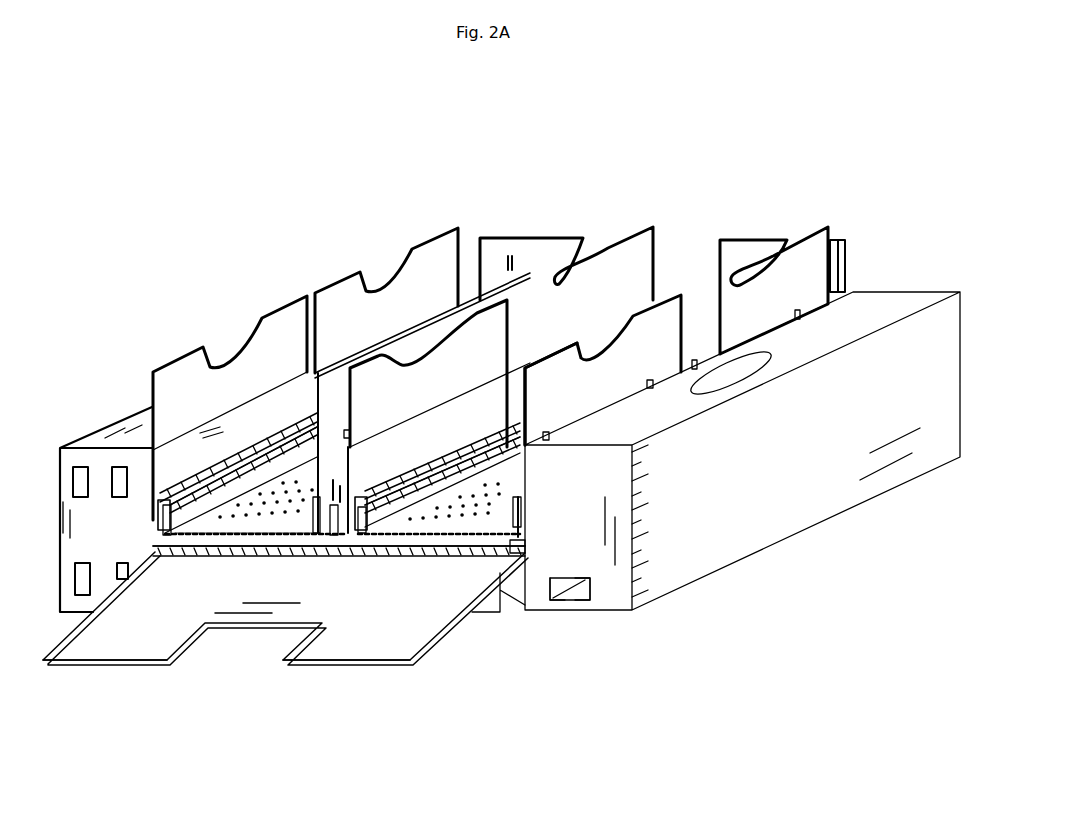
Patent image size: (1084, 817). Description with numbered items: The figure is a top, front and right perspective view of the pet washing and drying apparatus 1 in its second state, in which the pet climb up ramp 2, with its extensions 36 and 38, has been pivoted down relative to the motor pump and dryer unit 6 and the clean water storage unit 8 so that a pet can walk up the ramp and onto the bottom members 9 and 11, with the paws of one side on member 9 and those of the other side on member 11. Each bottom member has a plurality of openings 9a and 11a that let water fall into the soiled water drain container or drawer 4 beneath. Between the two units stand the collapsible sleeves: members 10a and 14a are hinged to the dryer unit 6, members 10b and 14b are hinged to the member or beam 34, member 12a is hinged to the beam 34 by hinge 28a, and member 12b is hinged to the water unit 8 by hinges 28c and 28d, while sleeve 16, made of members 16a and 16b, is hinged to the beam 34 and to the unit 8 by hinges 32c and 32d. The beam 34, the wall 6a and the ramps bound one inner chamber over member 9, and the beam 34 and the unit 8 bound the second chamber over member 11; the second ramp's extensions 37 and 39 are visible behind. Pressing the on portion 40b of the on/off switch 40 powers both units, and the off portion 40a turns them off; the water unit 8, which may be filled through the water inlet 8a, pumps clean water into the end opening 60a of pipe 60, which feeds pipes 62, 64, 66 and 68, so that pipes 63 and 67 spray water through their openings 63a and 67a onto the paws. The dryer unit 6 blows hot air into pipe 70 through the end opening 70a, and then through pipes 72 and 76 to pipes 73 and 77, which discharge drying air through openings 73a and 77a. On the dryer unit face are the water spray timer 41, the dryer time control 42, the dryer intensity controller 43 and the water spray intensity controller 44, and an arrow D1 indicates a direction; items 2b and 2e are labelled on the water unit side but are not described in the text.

The apparatus 1 is at (652, 205).
The pet climb up ramp 2 is at (285, 608).
The base portion 2b is at (740, 344).
The end wall 2e is at (848, 258).
The soiled water drain container or drawer 4 is at (483, 607).
The motor pump and dryer unit 6 is at (106, 509).
The wall 6a is at (176, 445).
The clean water storage unit 8 is at (733, 517).
The water inlet 8a is at (733, 375).
The bottom member 9 is at (187, 548).
The openings 9a is at (255, 518).
The sleeve or member 10a is at (386, 300).
The sleeve or member 10b is at (494, 298).
The bottom member 11 is at (458, 548).
The openings 11a is at (475, 522).
The sleeve or member 12a is at (566, 274).
The sleeve or member 12b is at (774, 290).
The sleeve or member 14a is at (230, 408).
The sleeve or member 14b is at (327, 390).
The collapsible sleeve 16 is at (603, 370).
The sleeve or member 16a is at (440, 373).
The sleeve or member 16b is at (551, 394).
The hinge 28a is at (348, 433).
The hinge 28c is at (800, 316).
The hinge 28d is at (694, 372).
The hinge 32c is at (650, 388).
The hinge 32d is at (550, 436).
The member or beam 34 is at (333, 453).
The extension 36 is at (140, 652).
The extension 37 is at (542, 247).
The extension 38 is at (330, 652).
The extension 39 is at (760, 260).
The on/off switch 40 is at (568, 600).
The off portion 40a is at (585, 598).
The on portion 40b is at (553, 597).
The water spray timer 41 is at (124, 576).
The dryer time control 42 is at (80, 566).
The dryer intensity controller 43 is at (85, 483).
The water spray intensity controller 44 is at (121, 485).
The pipe 60 is at (380, 556).
The end opening 60a is at (523, 548).
The pipe 62 is at (160, 497).
The pipe 63 is at (197, 490).
The openings 63a is at (228, 470).
The pipe 64 is at (310, 515).
The pipe 66 is at (360, 497).
The pipe 67 is at (390, 492).
The openings 67a is at (413, 462).
The pipe 68 is at (520, 527).
The pipe 70 is at (262, 527).
The end opening 70a is at (165, 542).
The pipe 72 is at (162, 522).
The pipe 73 is at (252, 455).
The openings 73a is at (275, 445).
The pipe 76 is at (358, 513).
The pipe 77 is at (450, 452).
The openings 77a is at (466, 445).
The direction D1 is at (222, 710).